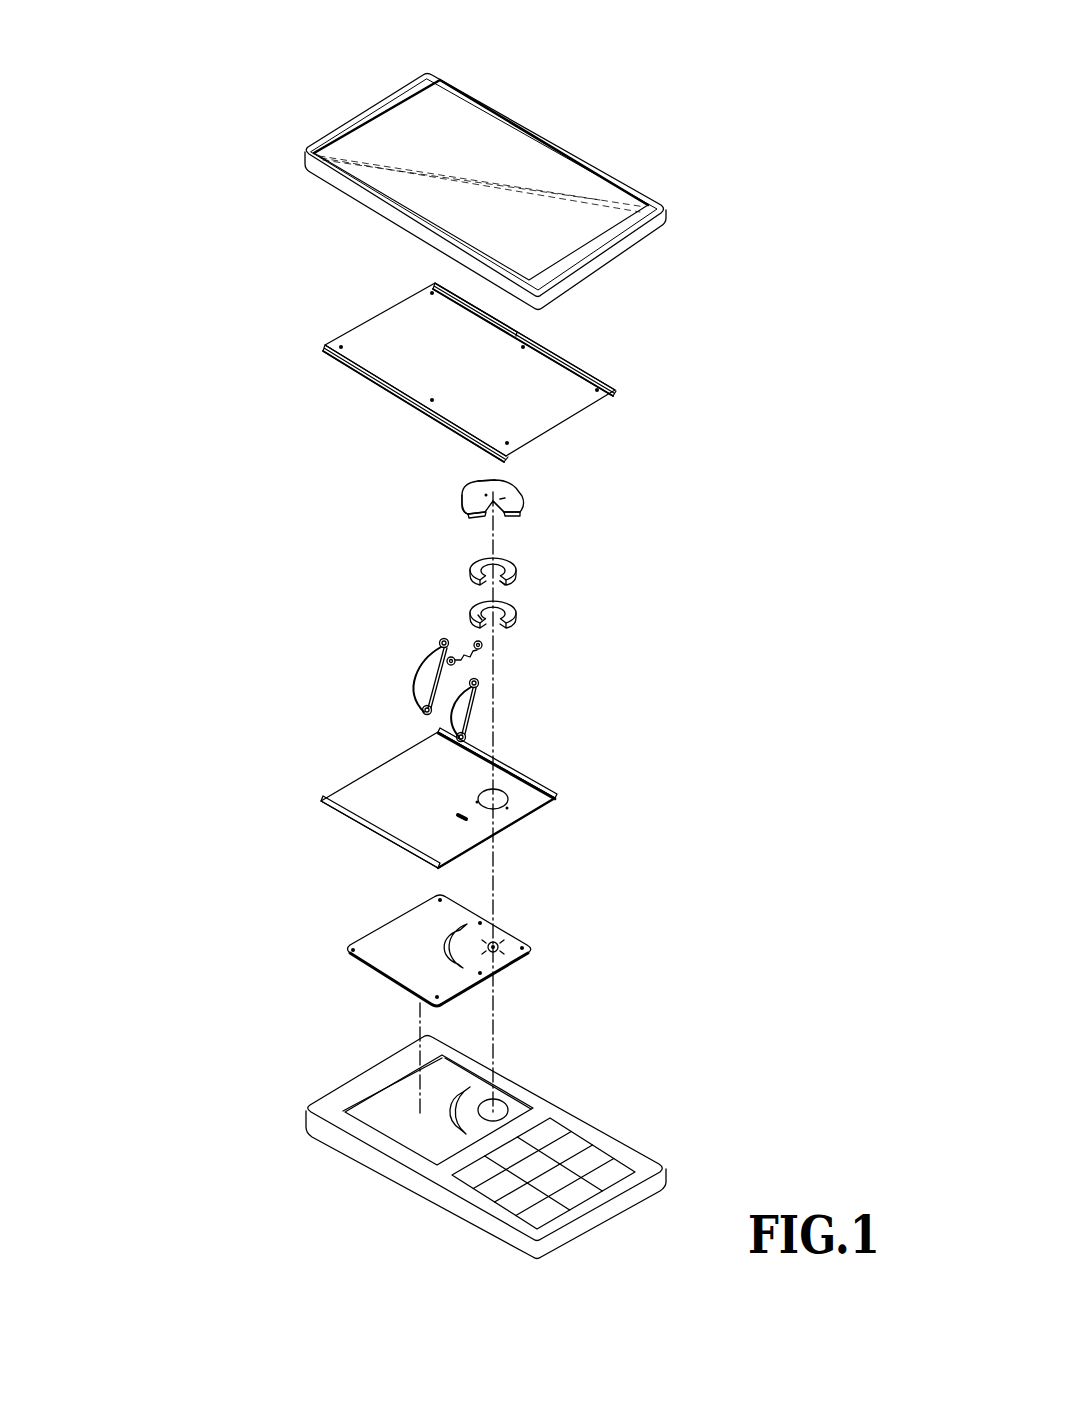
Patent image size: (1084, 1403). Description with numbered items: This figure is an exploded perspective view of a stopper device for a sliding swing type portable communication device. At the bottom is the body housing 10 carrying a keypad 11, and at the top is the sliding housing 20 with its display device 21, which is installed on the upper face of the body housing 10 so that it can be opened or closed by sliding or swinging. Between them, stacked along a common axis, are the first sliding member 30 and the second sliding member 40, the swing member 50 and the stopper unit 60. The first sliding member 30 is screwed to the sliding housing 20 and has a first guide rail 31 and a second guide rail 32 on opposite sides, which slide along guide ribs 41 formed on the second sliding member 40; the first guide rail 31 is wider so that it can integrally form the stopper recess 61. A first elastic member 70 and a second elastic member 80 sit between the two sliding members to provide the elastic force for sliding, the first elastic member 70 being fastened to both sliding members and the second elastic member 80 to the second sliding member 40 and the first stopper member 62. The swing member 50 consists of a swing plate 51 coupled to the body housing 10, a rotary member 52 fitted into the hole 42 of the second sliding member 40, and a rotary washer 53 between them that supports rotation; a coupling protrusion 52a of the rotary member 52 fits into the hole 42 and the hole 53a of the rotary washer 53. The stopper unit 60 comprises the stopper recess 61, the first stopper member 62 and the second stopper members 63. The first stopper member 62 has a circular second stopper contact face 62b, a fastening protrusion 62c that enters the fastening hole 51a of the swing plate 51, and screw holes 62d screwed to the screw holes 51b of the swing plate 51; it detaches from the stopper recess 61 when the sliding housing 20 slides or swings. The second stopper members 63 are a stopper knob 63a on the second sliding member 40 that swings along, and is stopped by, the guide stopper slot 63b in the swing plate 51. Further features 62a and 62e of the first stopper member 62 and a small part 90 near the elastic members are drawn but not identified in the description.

The body housing 10 is at (481, 1141).
The keypad 11 is at (582, 1140).
The sliding housing 20 is at (485, 170).
The display device 21 is at (543, 150).
The first sliding member 30 is at (724, 377).
The first guide rail 31 is at (615, 390).
The second guide rail 32 is at (506, 456).
The second sliding member 40 is at (431, 803).
The guide ribs 41 is at (322, 802).
The hole 42 is at (500, 790).
The swing member 50 is at (345, 948).
The swing plate 51 is at (655, 935).
The fastening hole 51a is at (523, 957).
The screw holes 51b is at (517, 936).
The rotary member 52 is at (517, 572).
The coupling protrusion 52a is at (505, 583).
The rotary washer 53 is at (517, 612).
The hole 53a is at (433, 585).
The stopper unit 60 is at (774, 893).
The stopper recess 61 is at (517, 332).
The first stopper member 62 is at (712, 462).
The knob top surface 62a is at (510, 484).
The second stopper contact face 62b is at (470, 514).
The fastening protrusion 62c is at (505, 513).
The screw holes 62d is at (500, 503).
The knob left side 62e is at (462, 487).
The second stopper members 63 is at (578, 858).
The stopper knob 63a is at (462, 817).
The guide stopper slot 63b is at (477, 912).
The first elastic member 70 is at (420, 655).
The second elastic member 80 is at (447, 703).
The torsion spring wire 90 is at (482, 652).